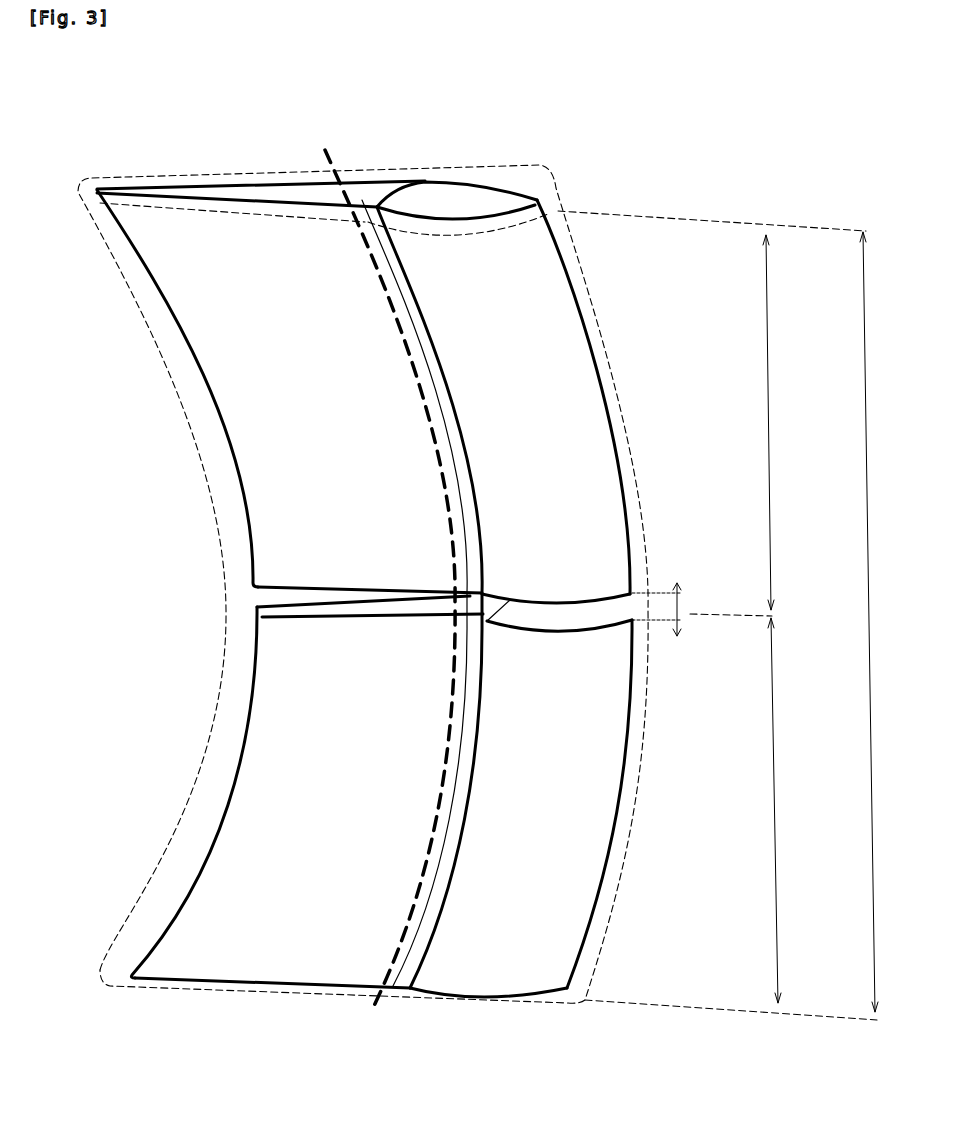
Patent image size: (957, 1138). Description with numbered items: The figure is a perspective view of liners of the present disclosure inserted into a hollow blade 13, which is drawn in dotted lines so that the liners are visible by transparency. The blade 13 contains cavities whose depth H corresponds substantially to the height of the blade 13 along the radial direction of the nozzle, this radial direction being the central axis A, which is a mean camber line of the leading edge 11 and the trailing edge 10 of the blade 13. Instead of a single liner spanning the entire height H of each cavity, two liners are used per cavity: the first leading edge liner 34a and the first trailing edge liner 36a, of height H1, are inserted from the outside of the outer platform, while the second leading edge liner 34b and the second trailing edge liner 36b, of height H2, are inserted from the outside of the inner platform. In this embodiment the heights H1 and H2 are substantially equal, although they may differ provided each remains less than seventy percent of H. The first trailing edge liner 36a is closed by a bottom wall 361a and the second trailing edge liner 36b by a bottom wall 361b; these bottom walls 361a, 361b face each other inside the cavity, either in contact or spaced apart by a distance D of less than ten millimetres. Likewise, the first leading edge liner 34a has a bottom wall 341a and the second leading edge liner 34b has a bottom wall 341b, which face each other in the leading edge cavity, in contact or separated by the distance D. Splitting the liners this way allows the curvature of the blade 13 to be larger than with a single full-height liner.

The trailing edge 10 is at (92, 183).
The leading edge 11 is at (541, 175).
The blade 13 is at (193, 416).
The first trailing edge liner 36a is at (263, 170).
The first leading edge liner 34a is at (486, 178).
The central axis A is at (380, 568).
The bottom wall 361a is at (313, 586).
The bottom wall 361b is at (327, 619).
The bottom wall 341a is at (563, 600).
The bottom wall 341b is at (563, 633).
The second trailing edge liner 36b is at (220, 981).
The second leading edge liner 34b is at (488, 1003).
The height of first liners H1 is at (712, 410).
The height of second liners H2 is at (753, 808).
The depth of cavities H is at (739, 626).
The distance D is at (680, 597).